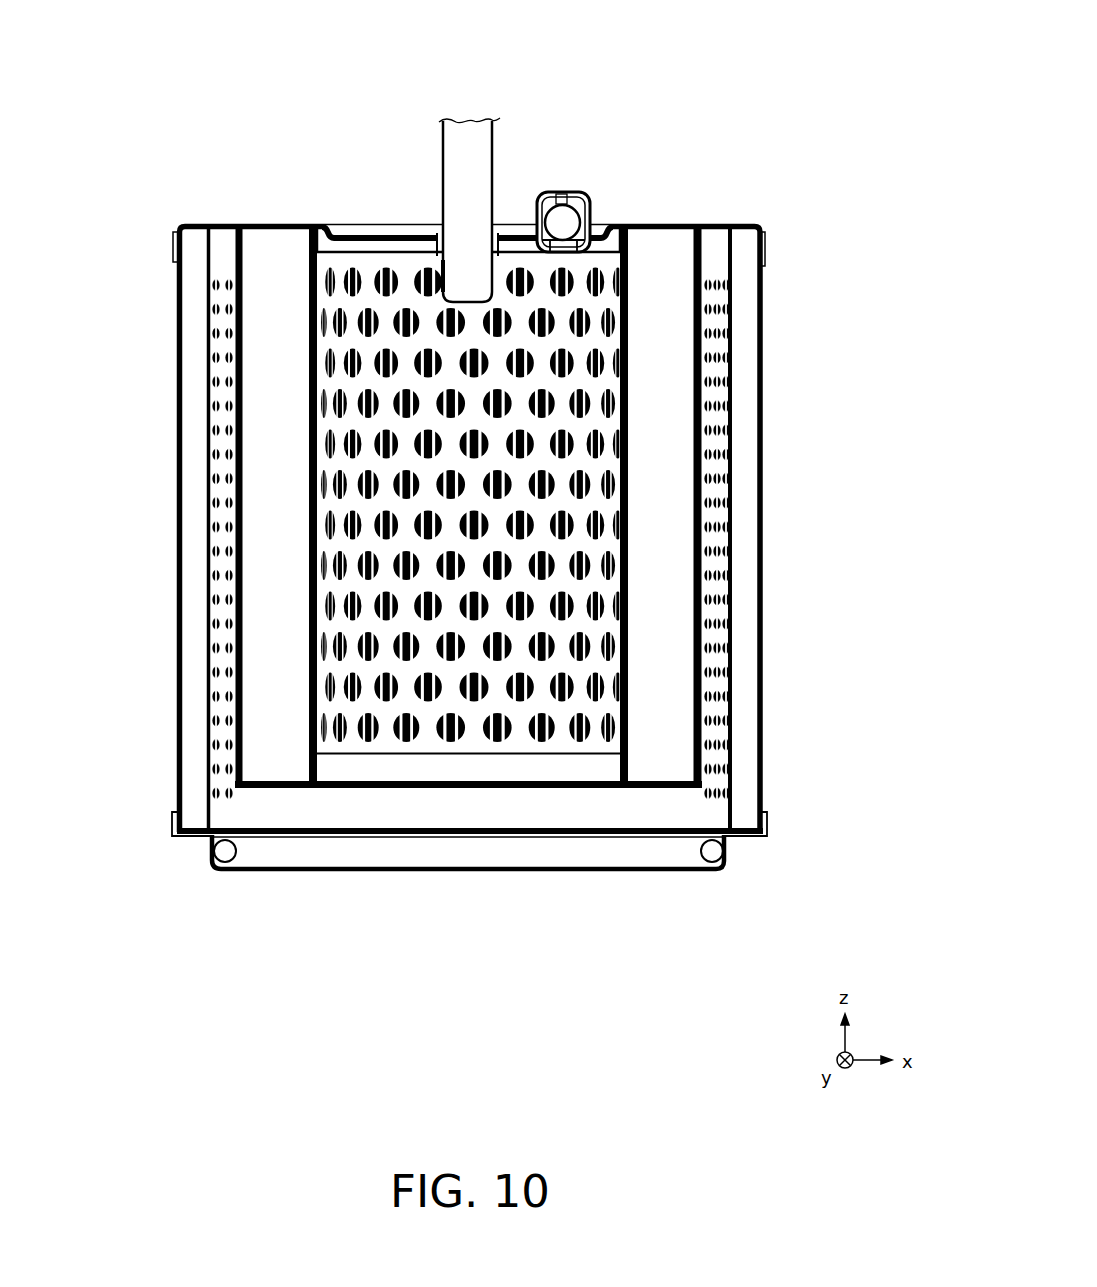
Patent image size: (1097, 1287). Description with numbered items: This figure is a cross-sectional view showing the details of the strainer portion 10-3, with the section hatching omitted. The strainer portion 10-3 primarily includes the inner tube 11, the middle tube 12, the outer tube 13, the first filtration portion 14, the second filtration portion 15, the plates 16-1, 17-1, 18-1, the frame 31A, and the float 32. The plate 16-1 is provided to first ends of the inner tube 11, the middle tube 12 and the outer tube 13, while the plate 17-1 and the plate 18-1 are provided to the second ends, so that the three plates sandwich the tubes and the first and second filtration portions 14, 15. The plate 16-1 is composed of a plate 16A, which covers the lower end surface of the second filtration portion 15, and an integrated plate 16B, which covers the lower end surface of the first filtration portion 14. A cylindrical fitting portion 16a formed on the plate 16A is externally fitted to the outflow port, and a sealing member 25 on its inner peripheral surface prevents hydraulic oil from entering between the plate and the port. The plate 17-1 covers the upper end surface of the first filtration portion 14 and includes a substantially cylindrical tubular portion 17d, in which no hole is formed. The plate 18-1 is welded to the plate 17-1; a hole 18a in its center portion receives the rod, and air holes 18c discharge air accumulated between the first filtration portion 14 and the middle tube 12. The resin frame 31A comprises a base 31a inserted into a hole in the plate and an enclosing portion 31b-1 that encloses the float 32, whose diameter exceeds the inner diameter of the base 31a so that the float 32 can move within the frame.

The strainer portion 10-3 is at (833, 29).
The inner tube 11 is at (622, 445).
The middle tube 12 is at (716, 530).
The outer tube 13 is at (759, 590).
The first filtration portion 14 is at (670, 383).
The second filtration portion 15 is at (742, 680).
The plate 16-1 is at (480, 882).
The plate 16A is at (194, 838).
The plate 16B is at (317, 752).
The fitting portion 16a is at (720, 845).
The plate 17-1 is at (285, 223).
The tubular portion 17d is at (235, 259).
The plate 18-1 is at (372, 232).
The hole 18a is at (447, 236).
The air hole 18c is at (722, 220).
The sealing member 25 is at (714, 856).
The frame 31A is at (638, 170).
The base 31a is at (583, 262).
The enclosing portion 31b-1 is at (540, 194).
The float 32 is at (566, 221).